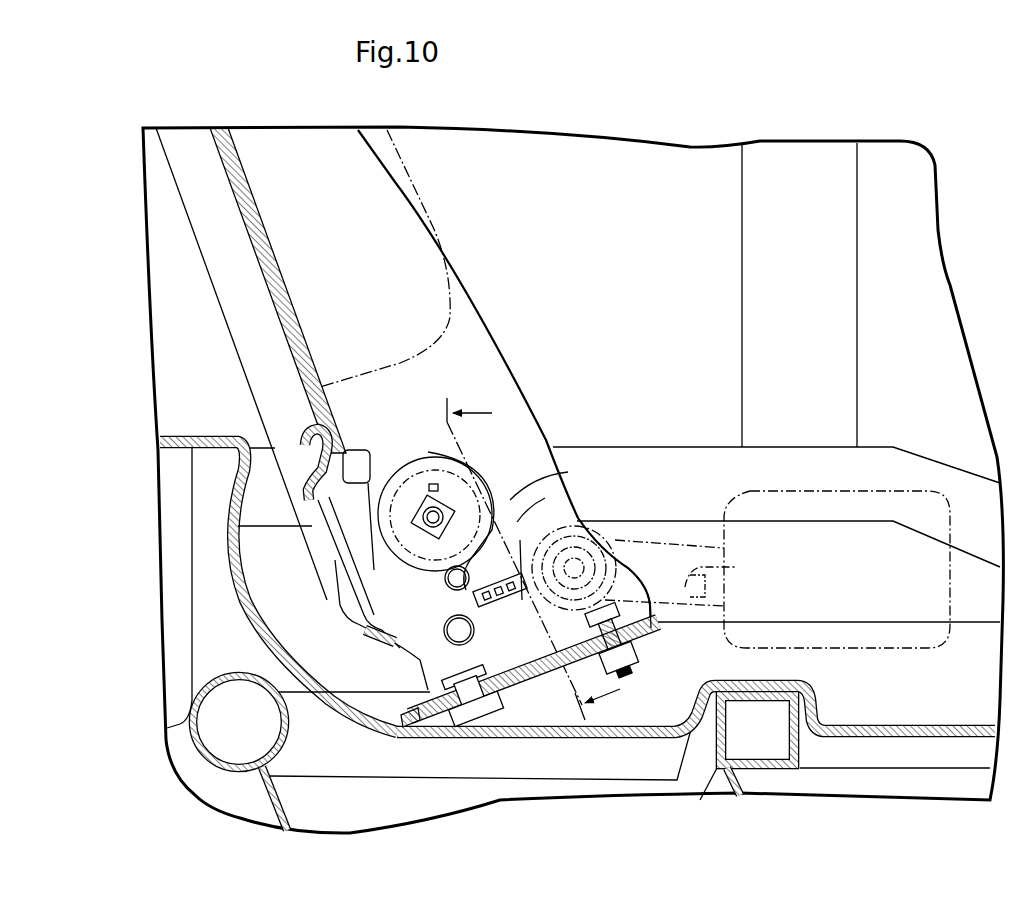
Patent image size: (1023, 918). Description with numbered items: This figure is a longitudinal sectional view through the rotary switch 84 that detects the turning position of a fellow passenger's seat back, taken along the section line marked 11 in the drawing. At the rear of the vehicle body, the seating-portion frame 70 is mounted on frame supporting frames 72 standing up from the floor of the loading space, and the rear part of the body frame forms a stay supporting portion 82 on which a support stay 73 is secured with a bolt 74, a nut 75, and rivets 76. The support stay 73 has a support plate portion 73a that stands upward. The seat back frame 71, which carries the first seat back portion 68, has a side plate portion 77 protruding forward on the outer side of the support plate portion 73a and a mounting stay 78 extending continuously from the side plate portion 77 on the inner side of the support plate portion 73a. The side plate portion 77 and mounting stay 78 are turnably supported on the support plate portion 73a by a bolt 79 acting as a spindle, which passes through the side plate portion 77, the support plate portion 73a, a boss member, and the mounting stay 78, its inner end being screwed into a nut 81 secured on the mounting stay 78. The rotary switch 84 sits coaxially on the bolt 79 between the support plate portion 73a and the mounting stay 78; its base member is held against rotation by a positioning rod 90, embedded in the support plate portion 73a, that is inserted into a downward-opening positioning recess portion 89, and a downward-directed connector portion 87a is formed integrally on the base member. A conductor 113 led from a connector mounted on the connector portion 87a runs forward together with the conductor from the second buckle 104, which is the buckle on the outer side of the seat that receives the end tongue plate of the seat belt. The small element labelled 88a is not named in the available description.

The section line 11 is at (564, 544).
The first seat back portion 68 is at (410, 173).
The seating-portion frame 70 is at (807, 692).
The seat back frame 71 is at (232, 288).
The frame supporting frame 72 is at (716, 765).
The support stay 73 is at (548, 660).
The support plate portion 73a is at (510, 498).
The bolt 74 is at (631, 573).
The nut 75 is at (627, 660).
The rivet 76 is at (492, 720).
The side plate portion 77 is at (473, 313).
The mounting stay 78 is at (403, 493).
The bolt 79 is at (430, 528).
The nut 81 is at (497, 512).
The stay supporting portion 82 is at (420, 718).
The rotary switch 84 is at (520, 518).
The connector portion 87a is at (528, 530).
The pin 88a is at (443, 487).
The positioning recess portion 89 is at (505, 680).
The positioning rod 90 is at (380, 623).
The second buckle 104 is at (890, 490).
The conductor 113 is at (693, 573).